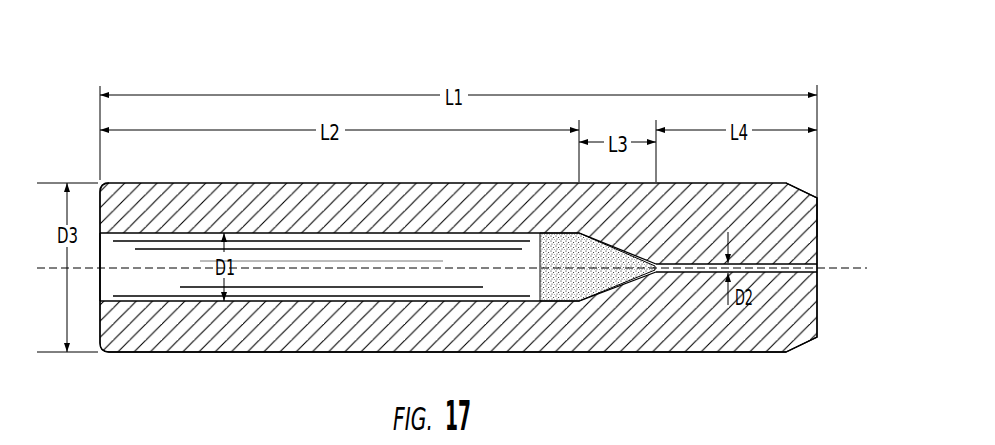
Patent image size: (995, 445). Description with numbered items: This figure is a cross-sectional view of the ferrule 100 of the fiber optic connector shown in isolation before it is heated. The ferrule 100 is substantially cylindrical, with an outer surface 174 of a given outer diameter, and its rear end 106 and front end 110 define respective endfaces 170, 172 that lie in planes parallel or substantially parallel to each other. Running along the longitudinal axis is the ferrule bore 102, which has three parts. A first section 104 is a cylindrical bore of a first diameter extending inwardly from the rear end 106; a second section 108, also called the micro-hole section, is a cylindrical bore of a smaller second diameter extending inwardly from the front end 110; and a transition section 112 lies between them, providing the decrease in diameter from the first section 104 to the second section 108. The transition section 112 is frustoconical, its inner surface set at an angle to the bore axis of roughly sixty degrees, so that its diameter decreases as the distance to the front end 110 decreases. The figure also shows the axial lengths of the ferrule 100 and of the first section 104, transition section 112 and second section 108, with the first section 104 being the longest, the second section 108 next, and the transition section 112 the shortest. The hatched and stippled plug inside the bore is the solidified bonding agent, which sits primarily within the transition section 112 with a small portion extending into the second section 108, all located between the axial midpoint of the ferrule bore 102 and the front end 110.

The tool body 100 is at (170, 183).
The ferrule bore 102 is at (98, 287).
The first section 104 is at (175, 302).
The rear end 106 is at (73, 191).
The second section 108 is at (778, 273).
The front end 110 is at (826, 196).
The transition section 112 is at (607, 292).
The endface 170 is at (100, 213).
The endface 172 is at (817, 223).
The outer surface 174 is at (483, 352).